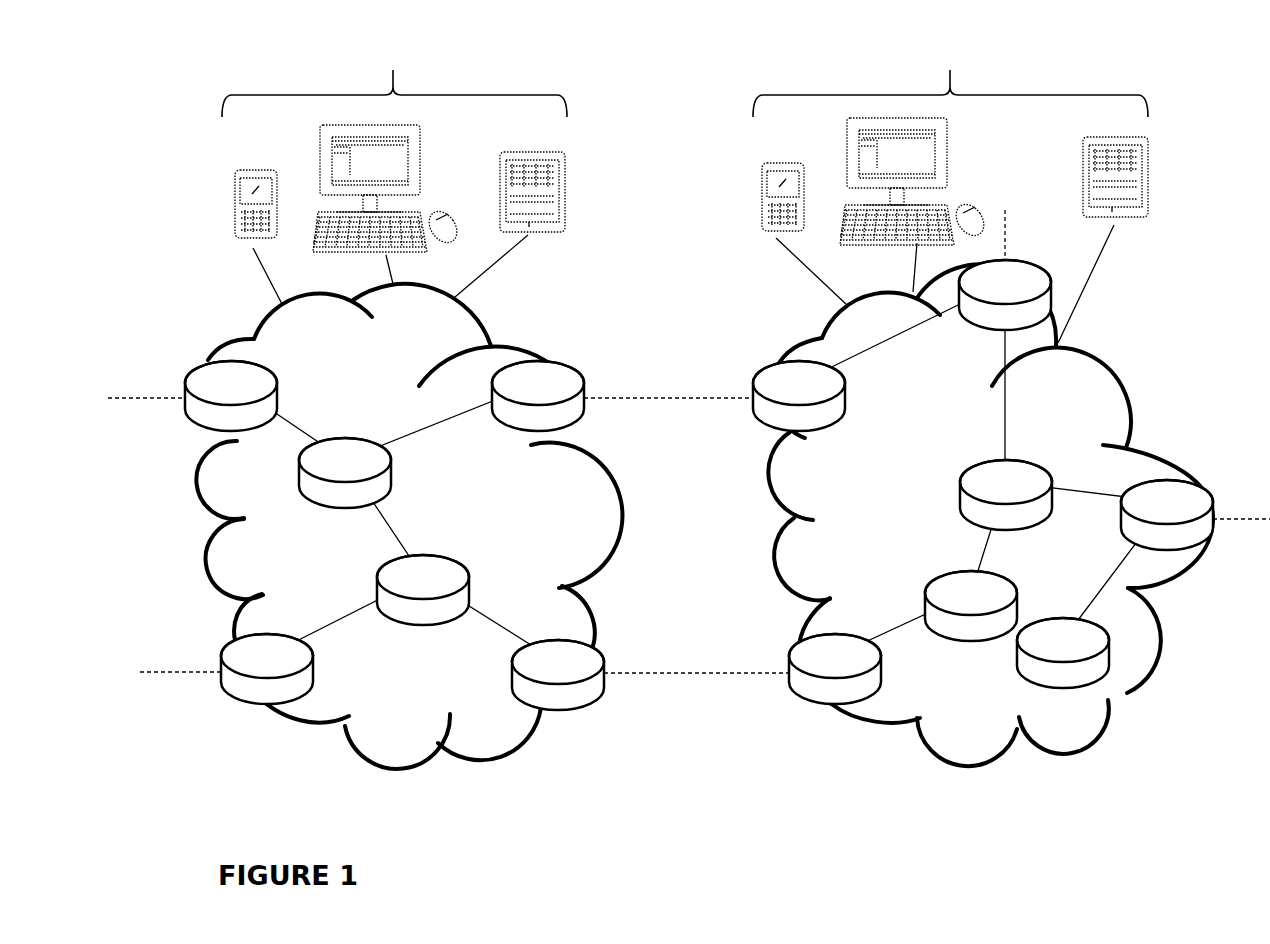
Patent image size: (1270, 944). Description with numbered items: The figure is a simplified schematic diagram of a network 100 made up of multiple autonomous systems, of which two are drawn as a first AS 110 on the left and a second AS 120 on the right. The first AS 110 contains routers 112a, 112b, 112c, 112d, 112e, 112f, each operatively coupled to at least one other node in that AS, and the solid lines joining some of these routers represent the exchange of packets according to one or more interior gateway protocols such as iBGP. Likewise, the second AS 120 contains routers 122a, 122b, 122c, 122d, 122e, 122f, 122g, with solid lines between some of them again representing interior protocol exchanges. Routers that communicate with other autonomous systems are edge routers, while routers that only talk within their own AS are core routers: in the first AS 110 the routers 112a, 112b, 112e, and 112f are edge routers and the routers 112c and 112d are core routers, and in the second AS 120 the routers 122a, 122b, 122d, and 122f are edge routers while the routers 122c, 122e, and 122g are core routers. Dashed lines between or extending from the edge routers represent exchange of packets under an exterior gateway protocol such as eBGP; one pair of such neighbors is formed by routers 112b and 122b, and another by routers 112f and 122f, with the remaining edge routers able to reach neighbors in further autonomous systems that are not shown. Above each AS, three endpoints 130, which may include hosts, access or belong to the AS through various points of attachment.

The network 100 is at (686, 822).
The first AS 110 is at (448, 526).
The second AS 120 is at (1011, 488).
The endpoints 130 is at (685, 189).
The router 112a is at (231, 396).
The router 112b is at (538, 396).
The router 112c is at (345, 473).
The router 112d is at (423, 590).
The router 112e is at (267, 669).
The router 112f is at (558, 675).
The router 122a is at (1005, 295).
The router 122b is at (799, 396).
The router 122c is at (1006, 495).
The router 122d is at (1167, 515).
The router 122e is at (971, 606).
The router 122f is at (835, 669).
The router 122g is at (1063, 653).